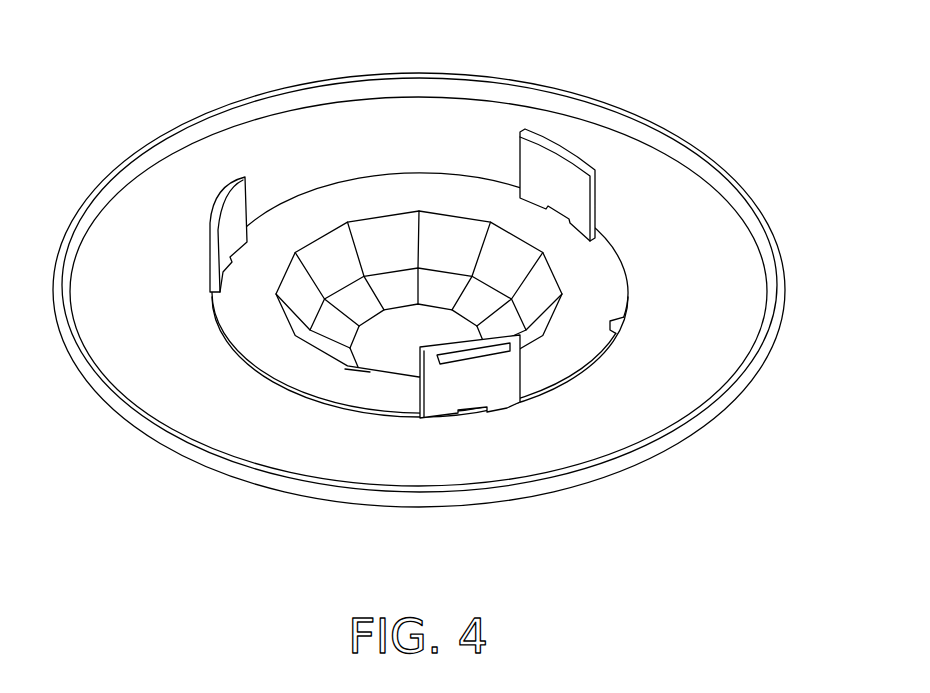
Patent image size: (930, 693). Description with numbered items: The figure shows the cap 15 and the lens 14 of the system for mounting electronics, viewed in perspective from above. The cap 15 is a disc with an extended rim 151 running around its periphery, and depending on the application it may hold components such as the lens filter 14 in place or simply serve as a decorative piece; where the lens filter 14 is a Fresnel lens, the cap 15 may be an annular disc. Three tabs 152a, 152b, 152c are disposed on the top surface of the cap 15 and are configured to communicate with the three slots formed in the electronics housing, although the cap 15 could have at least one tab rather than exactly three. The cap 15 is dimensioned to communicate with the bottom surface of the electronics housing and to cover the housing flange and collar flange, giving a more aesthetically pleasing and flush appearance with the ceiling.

The cap 15 is at (419, 266).
The extended rim 151 is at (566, 92).
The lens filter 14 is at (392, 176).
The tab 152a is at (507, 397).
The tab 152b is at (594, 207).
The tab 152c is at (212, 254).